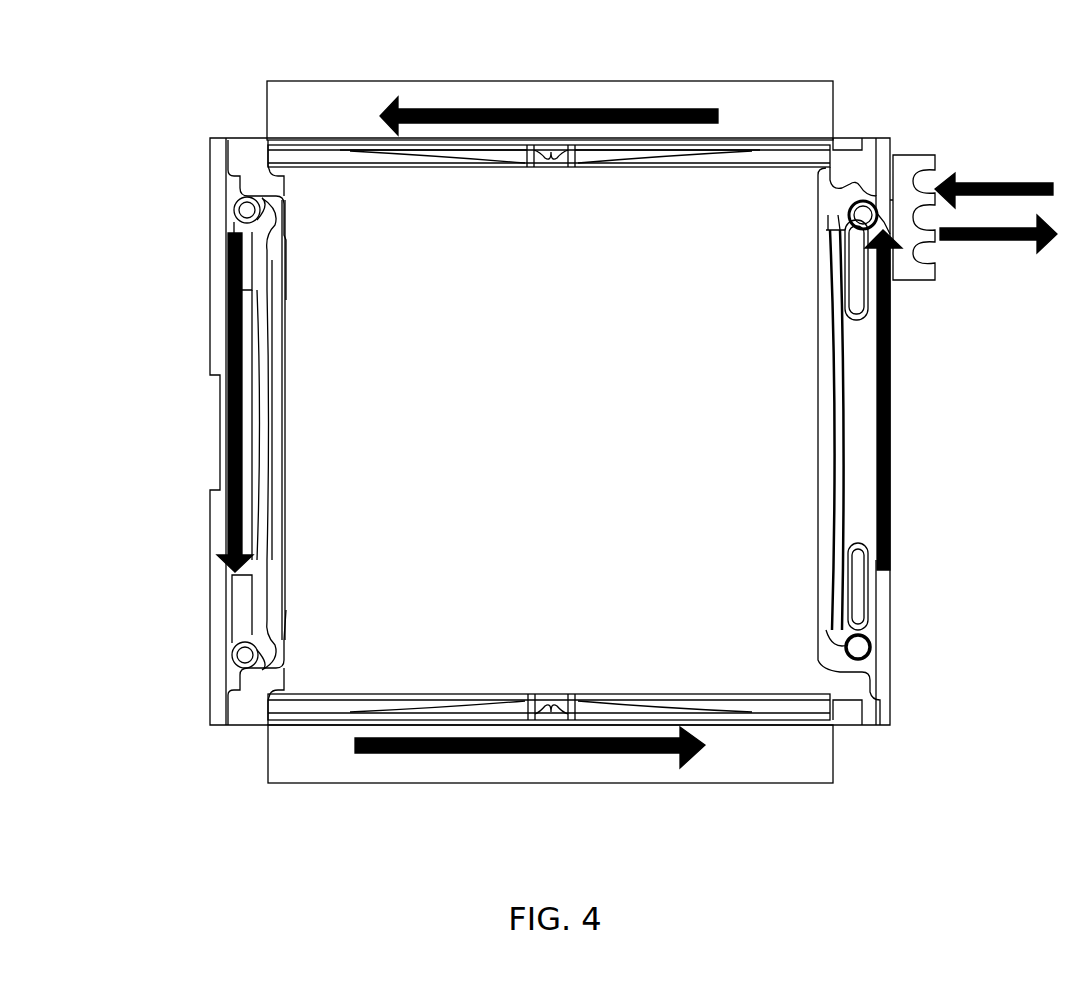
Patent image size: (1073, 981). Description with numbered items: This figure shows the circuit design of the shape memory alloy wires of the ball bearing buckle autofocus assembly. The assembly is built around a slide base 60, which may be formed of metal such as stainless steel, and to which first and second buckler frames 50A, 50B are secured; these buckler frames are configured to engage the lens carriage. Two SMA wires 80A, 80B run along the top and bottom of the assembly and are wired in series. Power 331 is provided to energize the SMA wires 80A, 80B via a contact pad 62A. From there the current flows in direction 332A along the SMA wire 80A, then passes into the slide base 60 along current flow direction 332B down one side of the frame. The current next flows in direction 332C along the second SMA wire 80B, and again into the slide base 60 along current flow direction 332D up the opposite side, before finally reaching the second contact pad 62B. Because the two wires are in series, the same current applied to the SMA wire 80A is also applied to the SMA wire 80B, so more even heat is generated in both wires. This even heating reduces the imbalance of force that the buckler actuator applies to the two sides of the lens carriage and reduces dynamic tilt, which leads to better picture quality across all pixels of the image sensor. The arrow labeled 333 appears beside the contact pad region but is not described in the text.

The slide base 60 is at (550, 431).
The SMA wire 80A is at (730, 143).
The SMA wire 80B is at (768, 725).
The first buckler frame 50A is at (262, 407).
The second buckler frame 50B is at (845, 398).
The contact pad 62A is at (935, 182).
The contact pad 62B is at (853, 212).
The power 331 is at (994, 184).
The outlet flow 333 is at (998, 243).
The current flow direction 332A is at (550, 110).
The current flow direction 332B is at (195, 402).
The current flow direction 332C is at (550, 754).
The current flow direction 332D is at (919, 400).